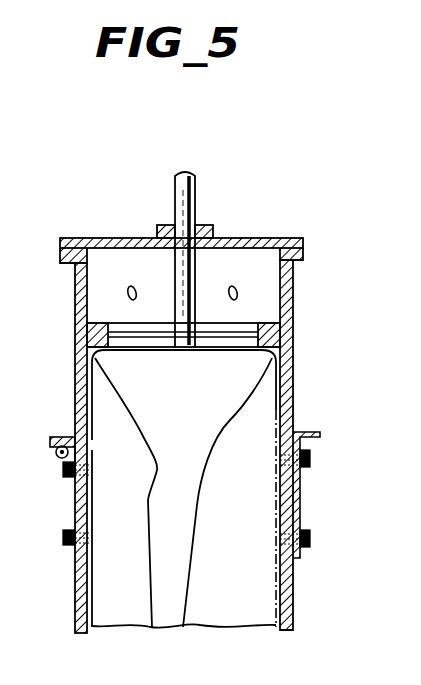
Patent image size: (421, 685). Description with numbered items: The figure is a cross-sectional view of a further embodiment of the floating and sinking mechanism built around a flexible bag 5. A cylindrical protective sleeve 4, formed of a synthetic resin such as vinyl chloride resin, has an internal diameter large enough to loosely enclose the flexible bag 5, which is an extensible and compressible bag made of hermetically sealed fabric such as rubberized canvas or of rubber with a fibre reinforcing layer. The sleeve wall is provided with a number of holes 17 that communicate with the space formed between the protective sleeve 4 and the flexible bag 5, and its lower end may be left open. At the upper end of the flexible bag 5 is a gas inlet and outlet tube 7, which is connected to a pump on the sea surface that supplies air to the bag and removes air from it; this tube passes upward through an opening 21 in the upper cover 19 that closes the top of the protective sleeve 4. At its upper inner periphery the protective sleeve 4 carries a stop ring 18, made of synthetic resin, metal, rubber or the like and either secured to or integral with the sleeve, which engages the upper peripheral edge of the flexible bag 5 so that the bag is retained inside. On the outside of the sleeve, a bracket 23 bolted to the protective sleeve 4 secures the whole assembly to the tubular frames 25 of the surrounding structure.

The upper cover 19 is at (130, 238).
The opening 21 is at (197, 226).
The holes 17 is at (78, 440).
The stop ring 18 is at (280, 332).
The protective sleeve 4 is at (287, 370).
The gas inlet and outlet tube 7 is at (178, 283).
The bracket 23 is at (77, 405).
The flexible bag 5 is at (193, 465).
The tubular frames 25 is at (55, 450).